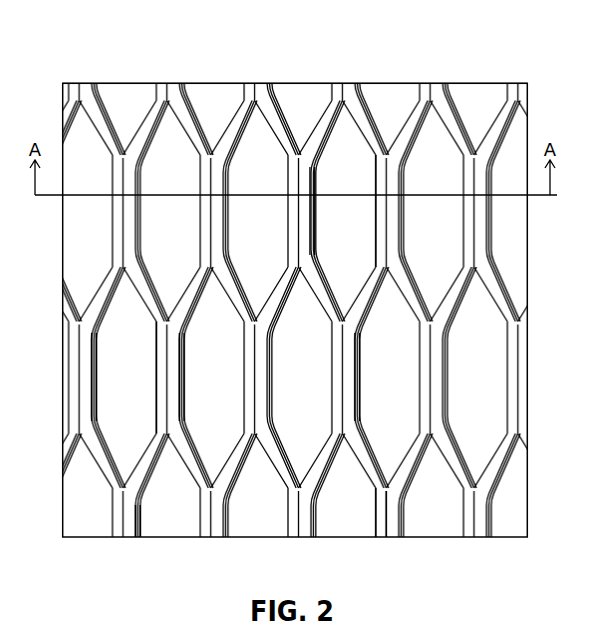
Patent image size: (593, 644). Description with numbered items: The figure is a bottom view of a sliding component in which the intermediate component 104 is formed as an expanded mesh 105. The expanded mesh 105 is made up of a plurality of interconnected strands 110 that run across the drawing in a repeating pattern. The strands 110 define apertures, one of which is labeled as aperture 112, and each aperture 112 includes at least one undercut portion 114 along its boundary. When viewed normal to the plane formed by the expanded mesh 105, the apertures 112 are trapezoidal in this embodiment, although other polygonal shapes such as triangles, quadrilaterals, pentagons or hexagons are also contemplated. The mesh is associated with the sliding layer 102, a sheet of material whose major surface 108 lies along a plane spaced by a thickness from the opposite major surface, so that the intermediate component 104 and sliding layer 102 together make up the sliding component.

The sliding layer 102 is at (150, 392).
The intermediate component 104 is at (389, 537).
The expanded mesh 105 is at (252, 84).
The major surface 108 is at (320, 241).
The strands 110 is at (136, 537).
The aperture 112 is at (384, 405).
The undercut portion 114 is at (196, 368).